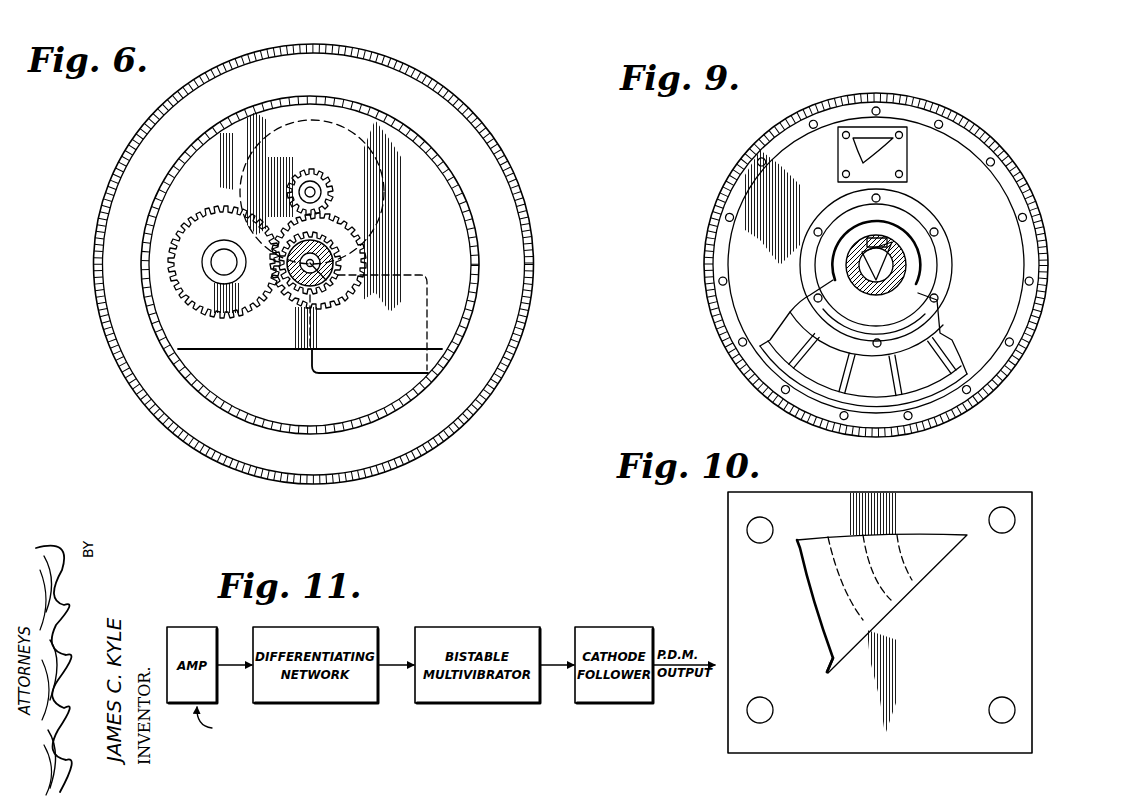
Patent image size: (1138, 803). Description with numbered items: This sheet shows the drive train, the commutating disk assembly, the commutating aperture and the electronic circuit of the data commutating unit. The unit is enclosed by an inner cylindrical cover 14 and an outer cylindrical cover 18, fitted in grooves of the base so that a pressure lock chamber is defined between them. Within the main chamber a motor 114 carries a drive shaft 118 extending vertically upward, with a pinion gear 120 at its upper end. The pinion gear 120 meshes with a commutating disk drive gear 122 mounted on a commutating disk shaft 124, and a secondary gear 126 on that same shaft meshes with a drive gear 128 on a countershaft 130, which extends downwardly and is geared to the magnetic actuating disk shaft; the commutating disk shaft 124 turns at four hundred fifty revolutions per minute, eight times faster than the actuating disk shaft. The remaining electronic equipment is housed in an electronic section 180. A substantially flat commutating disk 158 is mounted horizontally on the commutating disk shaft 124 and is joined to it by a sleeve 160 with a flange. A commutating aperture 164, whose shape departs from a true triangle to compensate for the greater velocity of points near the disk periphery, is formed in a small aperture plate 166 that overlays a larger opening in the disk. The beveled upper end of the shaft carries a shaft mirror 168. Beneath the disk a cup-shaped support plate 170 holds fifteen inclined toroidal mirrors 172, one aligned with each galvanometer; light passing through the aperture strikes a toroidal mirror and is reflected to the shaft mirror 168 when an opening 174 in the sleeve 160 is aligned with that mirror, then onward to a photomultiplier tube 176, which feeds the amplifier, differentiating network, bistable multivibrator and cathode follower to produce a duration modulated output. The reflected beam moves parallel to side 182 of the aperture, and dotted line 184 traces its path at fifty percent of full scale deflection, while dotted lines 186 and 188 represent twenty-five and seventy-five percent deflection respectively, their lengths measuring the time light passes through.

In FIG. 6, the inner cylindrical cover 14 is at (408, 405).
In FIG. 6, the outer cylindrical cover 18 is at (528, 310).
In FIG. 6, the motor 114 is at (352, 191).
In FIG. 6, the drive shaft 118 is at (323, 183).
In FIG. 6, the pinion gear 120 is at (310, 171).
In FIG. 6, the commutating disk drive gear 122 is at (285, 296).
In FIG. 6, the commutating disk shaft 124 is at (316, 268).
In FIG. 9, the commutating disk shaft 124 is at (862, 282).
In FIG. 6, the secondary gear 126 is at (310, 293).
In FIG. 6, the drive gear 128 is at (196, 296).
In FIG. 6, the countershaft 130 is at (224, 262).
In FIG. 6, the electronic section 180 is at (412, 360).
In FIG. 9, the commutating disk 158 is at (940, 152).
In FIG. 9, the sleeve 160 is at (892, 290).
In FIG. 9, the commutating aperture 164 is at (861, 140).
In FIG. 10, the commutating aperture 164 is at (822, 556).
In FIG. 9, the aperture plate 166 is at (838, 153).
In FIG. 10, the aperture plate 166 is at (742, 563).
In FIG. 9, the shaft mirror 168 is at (905, 250).
In FIG. 9, the support plate 170 is at (1050, 262).
In FIG. 9, the toroidal mirrors 172 is at (795, 362).
In FIG. 9, the opening in sleeve 174 is at (878, 246).
In FIG. 11, the photomultiplier tube 176 is at (312, 721).
In FIG. 10, the side of commutating aperture 182 is at (856, 652).
In FIG. 10, the dotted line 184 is at (900, 595).
In FIG. 10, the dotted line 186 is at (918, 574).
In FIG. 10, the dotted line 188 is at (882, 632).